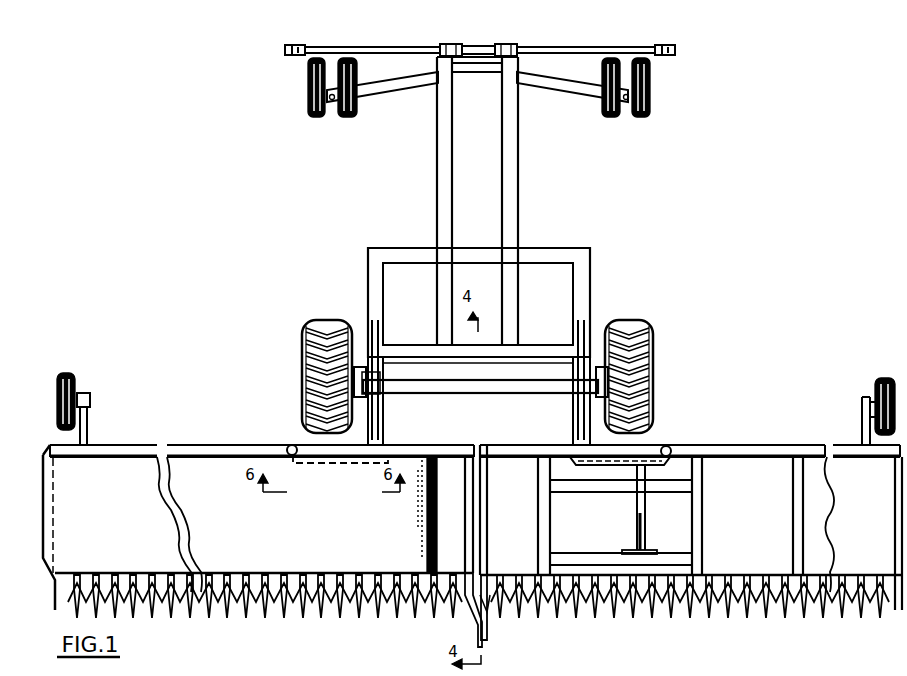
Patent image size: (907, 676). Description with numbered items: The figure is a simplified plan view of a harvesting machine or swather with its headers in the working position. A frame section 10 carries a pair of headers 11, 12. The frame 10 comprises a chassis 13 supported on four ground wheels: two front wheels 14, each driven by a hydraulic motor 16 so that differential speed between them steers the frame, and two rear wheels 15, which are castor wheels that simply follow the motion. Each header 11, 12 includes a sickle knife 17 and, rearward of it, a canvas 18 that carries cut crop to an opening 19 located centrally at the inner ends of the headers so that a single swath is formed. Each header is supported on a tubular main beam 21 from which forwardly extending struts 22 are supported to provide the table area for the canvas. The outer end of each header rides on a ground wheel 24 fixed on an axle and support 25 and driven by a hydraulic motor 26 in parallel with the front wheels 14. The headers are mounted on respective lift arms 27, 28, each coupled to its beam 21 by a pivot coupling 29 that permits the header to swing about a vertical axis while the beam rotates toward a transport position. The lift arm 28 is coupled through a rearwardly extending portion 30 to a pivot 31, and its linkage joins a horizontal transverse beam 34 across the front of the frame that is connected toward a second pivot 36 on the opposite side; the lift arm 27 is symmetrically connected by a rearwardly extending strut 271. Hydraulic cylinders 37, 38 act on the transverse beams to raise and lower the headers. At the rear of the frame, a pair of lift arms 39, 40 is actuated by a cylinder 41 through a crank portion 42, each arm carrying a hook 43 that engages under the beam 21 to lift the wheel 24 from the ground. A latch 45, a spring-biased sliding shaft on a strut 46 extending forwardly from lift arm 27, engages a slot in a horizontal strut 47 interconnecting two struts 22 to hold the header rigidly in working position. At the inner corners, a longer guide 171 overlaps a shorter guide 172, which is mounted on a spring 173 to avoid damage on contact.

The frame section 10 is at (423, 200).
The header 11 is at (703, 622).
The header 12 is at (415, 622).
The chassis 13 is at (437, 163).
The front wheel 14 is at (324, 320).
The rear wheel 15 is at (308, 94).
The hydraulic motor 16 is at (361, 367).
The sickle knife 17 is at (345, 612).
The canvas 18 is at (212, 463).
The opening 19 is at (427, 552).
The main beam 21 is at (120, 445).
The strut 22 is at (538, 550).
The ground wheel 24 is at (887, 378).
The axle and support 25 is at (862, 415).
The hydraulic motor 26 is at (86, 393).
The lift arm 27 is at (66, 373).
The lift arm 28 is at (313, 463).
The pivot coupling 29 is at (291, 446).
The rearwardly extending portion 30 is at (369, 423).
The pivot 31 is at (367, 395).
The horizontal transverse beam 34 is at (522, 381).
The second pivot 36 is at (596, 420).
The hydraulic cylinder 37 is at (383, 338).
The hydraulic cylinder 38 is at (573, 338).
The lift arm 39 is at (605, 47).
The lift arm 40 is at (390, 47).
The cylinder 41 is at (481, 46).
The crank portion 42 is at (449, 44).
The hook 43 is at (295, 45).
The latch 45 is at (636, 544).
The strut 46 is at (650, 518).
The horizontal strut 47 is at (608, 550).
The guide 171 is at (470, 642).
The guide 172 is at (487, 636).
The spring 173 is at (493, 622).
The rearwardly extending strut 271 is at (571, 436).